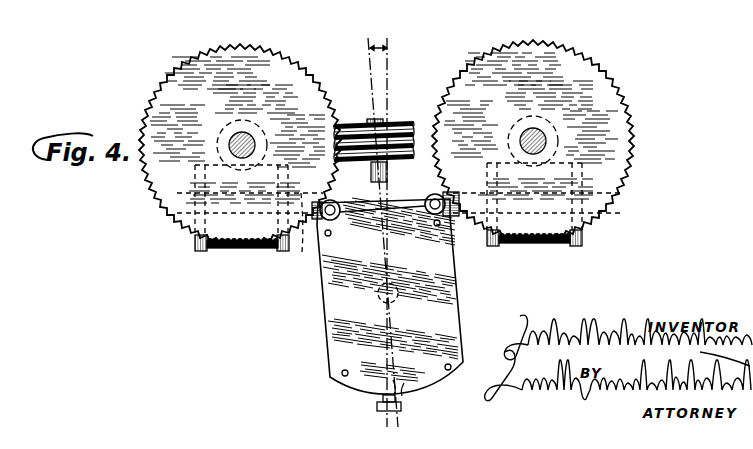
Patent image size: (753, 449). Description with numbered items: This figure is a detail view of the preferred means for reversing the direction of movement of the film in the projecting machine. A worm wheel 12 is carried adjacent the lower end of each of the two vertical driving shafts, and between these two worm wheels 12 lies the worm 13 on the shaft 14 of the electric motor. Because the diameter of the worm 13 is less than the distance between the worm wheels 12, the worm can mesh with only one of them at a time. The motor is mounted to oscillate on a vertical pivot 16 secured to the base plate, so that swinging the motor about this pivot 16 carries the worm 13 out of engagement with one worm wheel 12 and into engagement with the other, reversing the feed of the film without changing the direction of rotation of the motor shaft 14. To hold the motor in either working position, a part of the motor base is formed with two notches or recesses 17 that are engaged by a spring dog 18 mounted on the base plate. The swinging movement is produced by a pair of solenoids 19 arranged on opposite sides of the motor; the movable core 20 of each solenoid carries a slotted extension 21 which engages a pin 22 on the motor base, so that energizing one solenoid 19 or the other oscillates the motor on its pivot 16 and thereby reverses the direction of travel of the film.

The worm wheel 12 is at (162, 201).
The worm 13 is at (395, 121).
The motor shaft 14 is at (389, 170).
The vertical pivot 16 is at (381, 302).
The notches or recesses 17 is at (396, 396).
The spring dog 18 is at (377, 404).
The solenoid 19 is at (219, 249).
The movable core 20 is at (302, 252).
The slotted extension 21 is at (333, 200).
The pin 22 is at (340, 202).